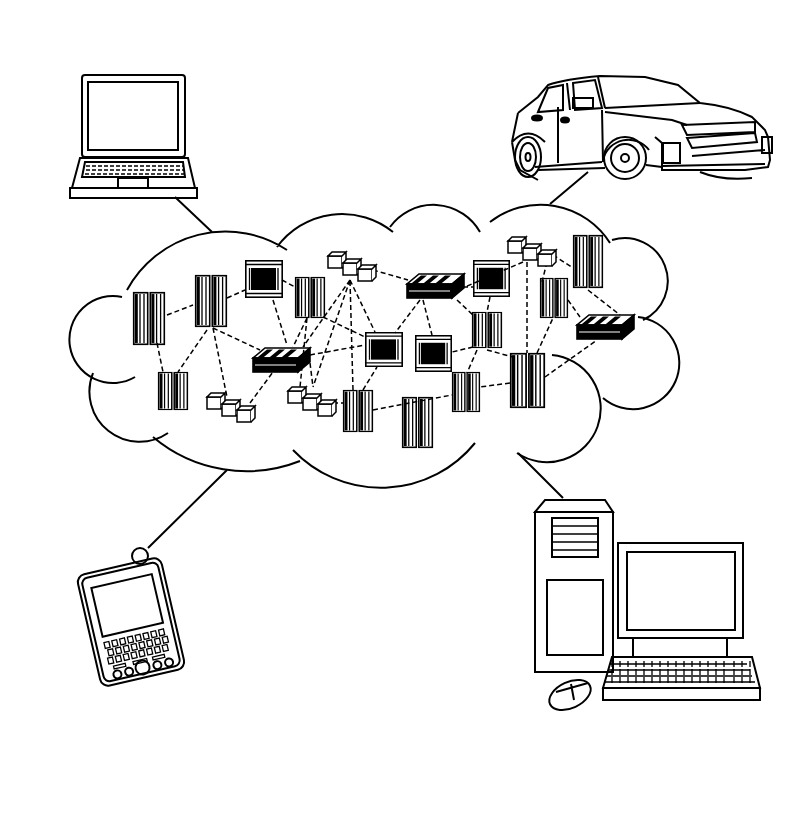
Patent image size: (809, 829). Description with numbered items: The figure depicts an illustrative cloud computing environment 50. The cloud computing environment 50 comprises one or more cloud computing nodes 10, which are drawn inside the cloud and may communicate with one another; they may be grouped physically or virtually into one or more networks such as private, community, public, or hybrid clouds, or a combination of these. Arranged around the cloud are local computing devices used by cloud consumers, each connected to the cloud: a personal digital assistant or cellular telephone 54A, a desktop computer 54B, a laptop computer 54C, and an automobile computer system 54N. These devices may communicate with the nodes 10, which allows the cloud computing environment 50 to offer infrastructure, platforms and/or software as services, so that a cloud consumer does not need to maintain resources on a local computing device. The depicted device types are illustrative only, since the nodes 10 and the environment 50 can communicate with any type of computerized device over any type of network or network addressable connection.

The cloud computing nodes 10 is at (636, 349).
The cloud computing environment 50 is at (677, 325).
The personal digital assistant or cellular telephone 54A is at (178, 610).
The desktop computer 54B is at (678, 542).
The laptop computer 54C is at (185, 120).
The automobile computer system 54N is at (512, 133).